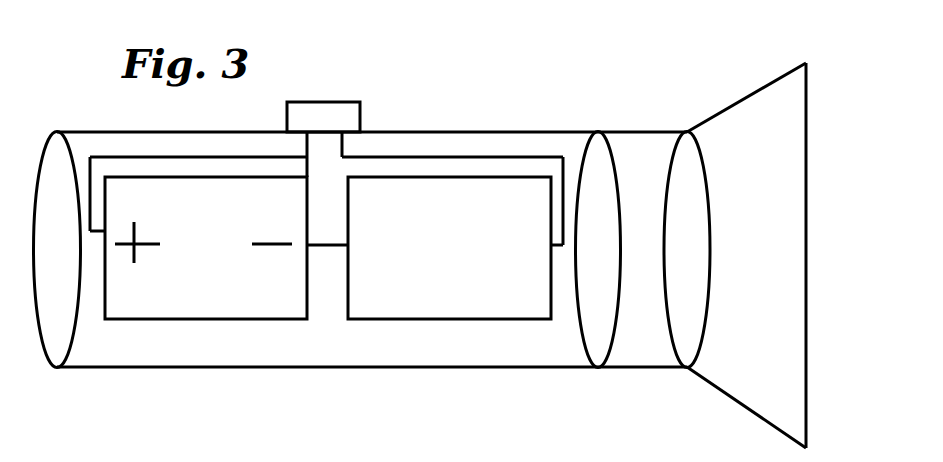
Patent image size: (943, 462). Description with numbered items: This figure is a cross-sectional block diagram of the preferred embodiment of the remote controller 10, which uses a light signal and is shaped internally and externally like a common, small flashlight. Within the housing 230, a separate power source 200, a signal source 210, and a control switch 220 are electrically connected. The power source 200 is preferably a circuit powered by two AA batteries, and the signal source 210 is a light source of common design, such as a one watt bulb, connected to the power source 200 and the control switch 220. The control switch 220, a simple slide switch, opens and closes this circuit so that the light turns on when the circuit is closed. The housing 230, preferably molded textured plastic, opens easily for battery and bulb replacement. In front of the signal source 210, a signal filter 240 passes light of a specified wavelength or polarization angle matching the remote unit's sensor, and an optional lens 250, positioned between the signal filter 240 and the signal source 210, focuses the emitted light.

The remote controller 10 is at (497, 66).
The power source 200 is at (167, 320).
The signal source 210 is at (437, 320).
The control switch 220 is at (335, 109).
The housing 230 is at (59, 130).
The signal filter 240 is at (686, 369).
The lens 250 is at (598, 369).